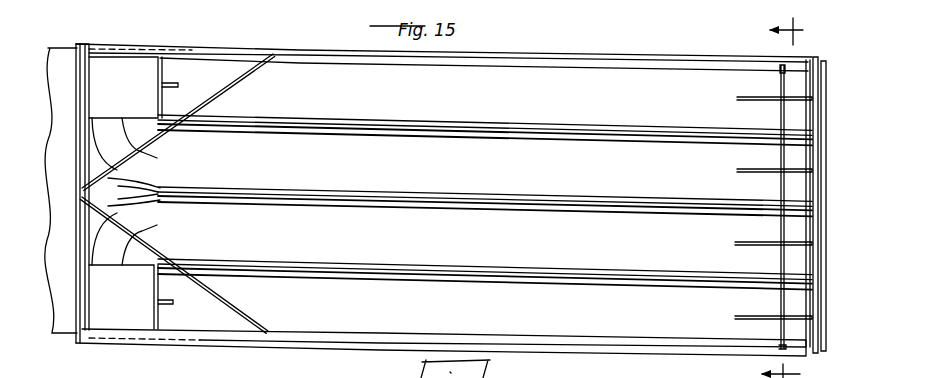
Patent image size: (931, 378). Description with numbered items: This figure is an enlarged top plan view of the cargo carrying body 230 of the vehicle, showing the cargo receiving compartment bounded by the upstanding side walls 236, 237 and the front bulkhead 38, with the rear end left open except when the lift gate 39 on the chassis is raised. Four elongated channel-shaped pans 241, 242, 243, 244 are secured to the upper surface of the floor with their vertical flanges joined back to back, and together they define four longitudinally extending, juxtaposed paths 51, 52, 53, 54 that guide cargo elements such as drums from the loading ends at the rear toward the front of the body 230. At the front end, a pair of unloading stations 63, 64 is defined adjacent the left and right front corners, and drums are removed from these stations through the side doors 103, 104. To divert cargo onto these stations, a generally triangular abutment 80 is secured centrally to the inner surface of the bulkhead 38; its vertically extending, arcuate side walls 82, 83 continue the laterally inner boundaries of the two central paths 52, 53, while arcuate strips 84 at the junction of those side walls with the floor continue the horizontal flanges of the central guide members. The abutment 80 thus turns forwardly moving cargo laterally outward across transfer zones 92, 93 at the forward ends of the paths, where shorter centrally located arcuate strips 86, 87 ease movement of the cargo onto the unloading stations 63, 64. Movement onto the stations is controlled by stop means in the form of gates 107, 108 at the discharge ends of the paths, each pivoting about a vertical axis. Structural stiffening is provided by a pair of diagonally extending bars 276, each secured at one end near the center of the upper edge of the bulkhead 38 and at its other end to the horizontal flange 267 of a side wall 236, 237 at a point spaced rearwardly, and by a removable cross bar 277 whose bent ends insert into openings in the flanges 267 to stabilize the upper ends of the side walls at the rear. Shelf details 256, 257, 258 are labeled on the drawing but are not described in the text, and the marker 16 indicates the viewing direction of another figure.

The body 230 is at (454, 189).
The side wall 237 is at (562, 52).
The side wall 236 is at (540, 353).
The side door 104 is at (124, 42).
The side door 103 is at (112, 339).
The front bulkhead 38 is at (90, 128).
The abutment 80 is at (92, 167).
The unloading station 64 is at (107, 98).
The unloading station 63 is at (108, 313).
The gate 108 is at (163, 70).
The gate 107 is at (160, 315).
The diagonally extending bar 276 is at (229, 90).
The arcuate strip 84 is at (91, 134).
The arcuate strip 87 is at (130, 137).
The arcuate strip 86 is at (122, 256).
The transfer zone 93 is at (104, 154).
The transfer zone 92 is at (94, 266).
The side wall of abutment 83 is at (126, 178).
The side wall of abutment 82 is at (124, 208).
The shelf upper surface 256 is at (640, 127).
The shelf lower surface 257 is at (675, 141).
The shelf support bar 258 is at (738, 99).
The cross bar 277 is at (780, 225).
The lift gate 39 is at (828, 76).
The horizontal flange 267 is at (482, 62).
The path 54 is at (576, 106).
The path 53 is at (565, 179).
The path 52 is at (558, 251).
The path 51 is at (546, 320).
The channel-shaped pan 244 is at (354, 66).
The channel-shaped pan 243 is at (367, 151).
The channel-shaped pan 242 is at (374, 248).
The channel-shaped pan 241 is at (365, 323).
The section line 16 is at (826, 377).